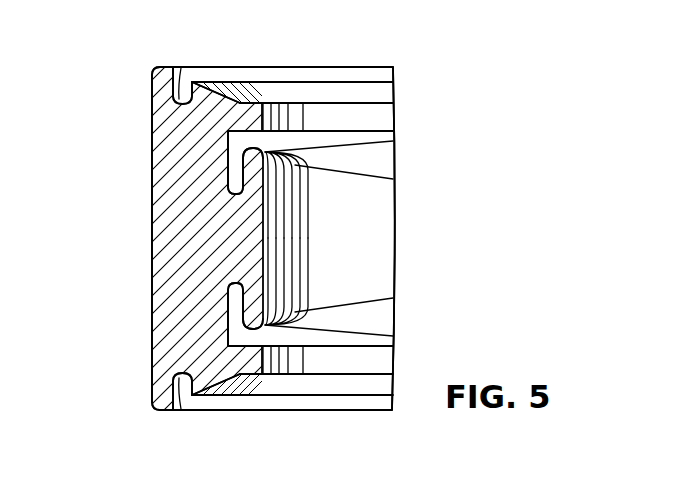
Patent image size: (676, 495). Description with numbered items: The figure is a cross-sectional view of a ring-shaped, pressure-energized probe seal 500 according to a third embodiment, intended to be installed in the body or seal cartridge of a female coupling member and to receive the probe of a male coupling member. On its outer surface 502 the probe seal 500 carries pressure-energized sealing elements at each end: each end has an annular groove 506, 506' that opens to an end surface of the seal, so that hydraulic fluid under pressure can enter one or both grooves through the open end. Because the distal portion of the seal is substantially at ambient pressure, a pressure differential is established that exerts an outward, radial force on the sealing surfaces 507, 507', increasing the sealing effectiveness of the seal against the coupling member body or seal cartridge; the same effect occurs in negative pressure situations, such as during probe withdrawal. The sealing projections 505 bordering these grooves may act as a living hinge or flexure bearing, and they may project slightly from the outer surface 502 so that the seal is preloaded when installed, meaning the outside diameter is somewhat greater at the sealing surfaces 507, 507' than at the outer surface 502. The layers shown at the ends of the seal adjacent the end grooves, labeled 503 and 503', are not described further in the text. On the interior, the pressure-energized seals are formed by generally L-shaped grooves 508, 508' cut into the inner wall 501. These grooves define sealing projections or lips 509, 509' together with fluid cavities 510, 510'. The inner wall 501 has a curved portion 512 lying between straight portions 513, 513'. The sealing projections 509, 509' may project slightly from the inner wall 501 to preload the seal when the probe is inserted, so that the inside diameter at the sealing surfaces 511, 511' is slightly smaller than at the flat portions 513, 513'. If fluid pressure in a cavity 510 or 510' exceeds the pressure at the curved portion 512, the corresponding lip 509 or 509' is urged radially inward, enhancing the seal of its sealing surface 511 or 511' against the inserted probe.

The probe seal 500 is at (412, 96).
The inner wall 501 is at (310, 238).
The outer surface 502 is at (156, 243).
The backing ring 503 is at (257, 58).
The backing ring 503' is at (262, 417).
The sealing projections 505 is at (157, 410).
The annular groove 506 is at (186, 58).
The annular groove 506' is at (186, 421).
The sealing surface 507 is at (118, 98).
The sealing surface 507' is at (118, 380).
The L-shaped groove 508 is at (148, 162).
The L-shaped groove 508' is at (147, 315).
The sealing projection 509 is at (375, 169).
The sealing projection 509' is at (378, 312).
The fluid cavity 510 is at (317, 195).
The fluid cavity 510' is at (320, 281).
The sealing surface 511 is at (364, 145).
The sealing surface 511' is at (367, 335).
The curved portion 512 is at (395, 233).
The straight portion 513 is at (333, 77).
The straight portion 513' is at (334, 404).